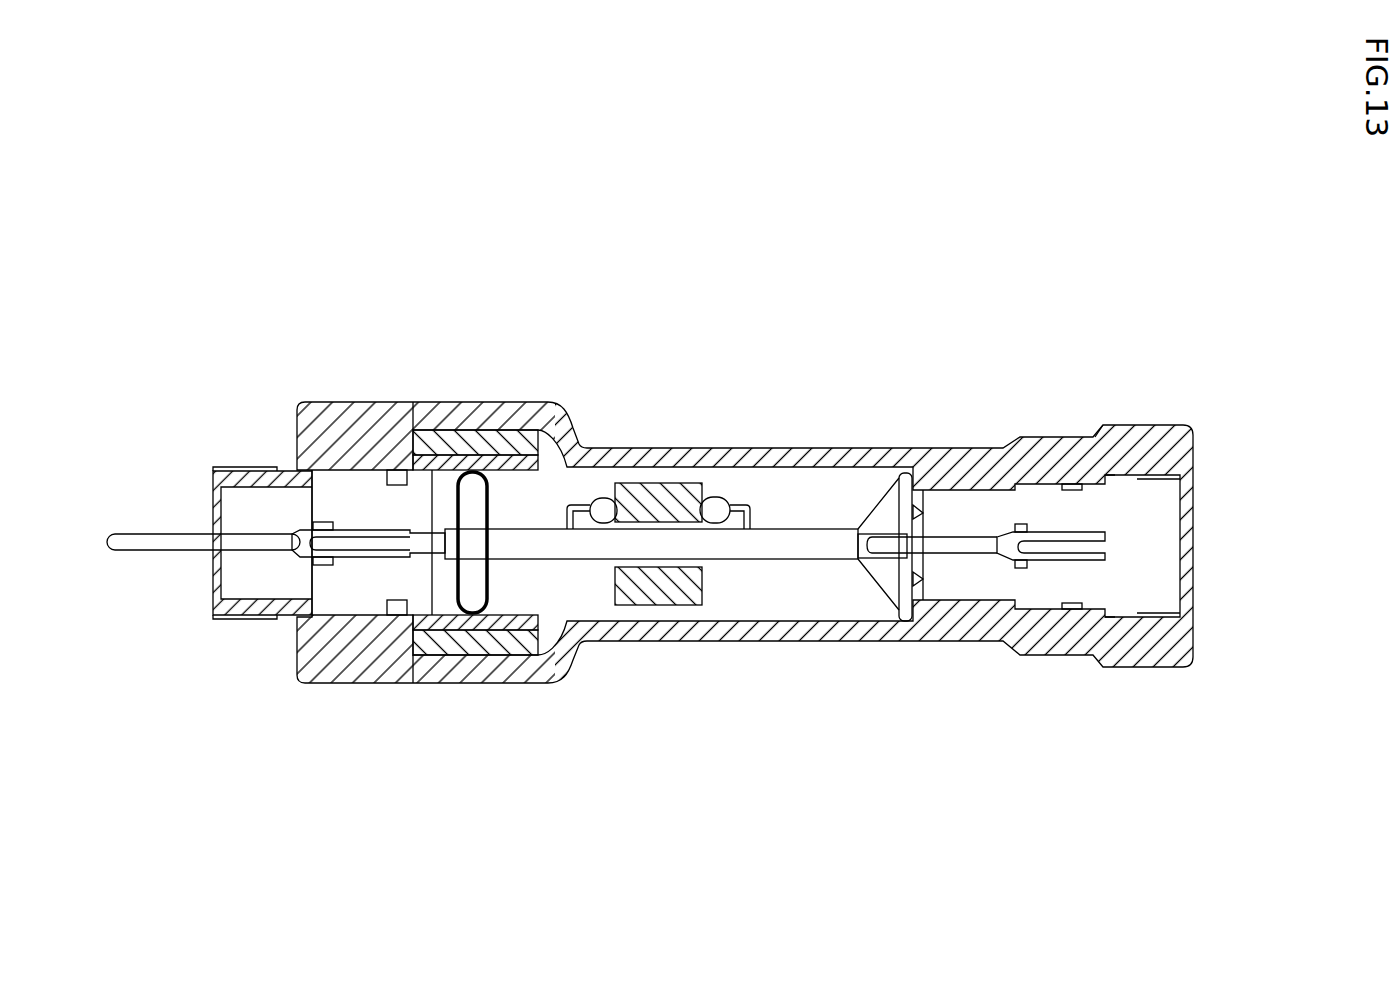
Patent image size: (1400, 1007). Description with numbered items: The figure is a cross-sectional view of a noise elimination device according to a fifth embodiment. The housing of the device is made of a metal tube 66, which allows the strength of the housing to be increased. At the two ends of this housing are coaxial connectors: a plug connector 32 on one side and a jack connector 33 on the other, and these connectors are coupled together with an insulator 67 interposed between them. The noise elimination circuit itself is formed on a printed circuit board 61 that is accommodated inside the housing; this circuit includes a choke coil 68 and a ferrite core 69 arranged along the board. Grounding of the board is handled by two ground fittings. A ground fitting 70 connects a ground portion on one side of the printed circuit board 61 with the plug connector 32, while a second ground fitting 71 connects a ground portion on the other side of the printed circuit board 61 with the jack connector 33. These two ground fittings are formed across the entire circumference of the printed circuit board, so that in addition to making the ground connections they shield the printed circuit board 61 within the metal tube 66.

The plug connector 32 is at (175, 512).
The jack connector 33 is at (1227, 492).
The printed circuit board 61 is at (775, 548).
The metal tube 66 is at (848, 450).
The insulator 67 is at (462, 448).
The choke coil 68 is at (716, 500).
The ferrite core 69 is at (650, 487).
The ground fitting 70 is at (452, 600).
The ground fitting 71 is at (893, 600).